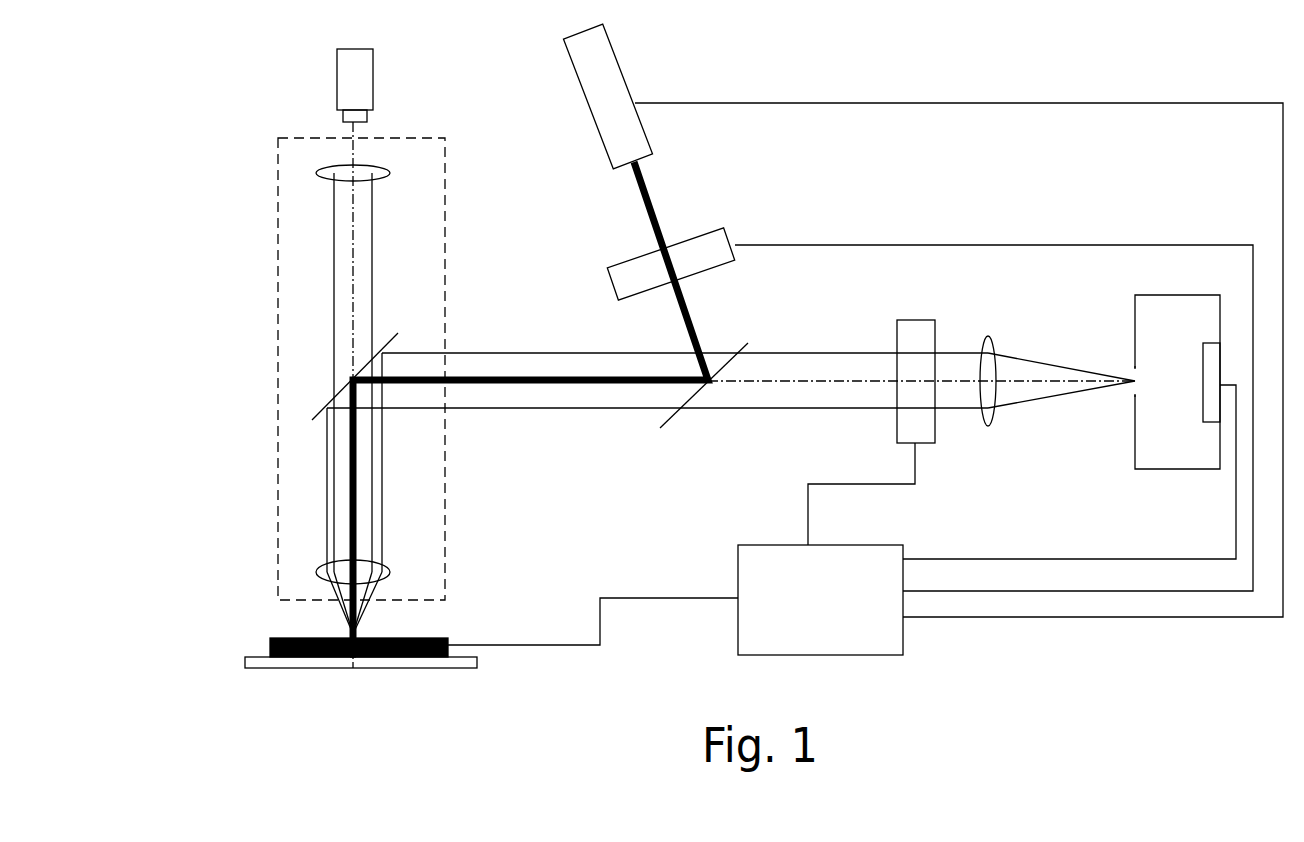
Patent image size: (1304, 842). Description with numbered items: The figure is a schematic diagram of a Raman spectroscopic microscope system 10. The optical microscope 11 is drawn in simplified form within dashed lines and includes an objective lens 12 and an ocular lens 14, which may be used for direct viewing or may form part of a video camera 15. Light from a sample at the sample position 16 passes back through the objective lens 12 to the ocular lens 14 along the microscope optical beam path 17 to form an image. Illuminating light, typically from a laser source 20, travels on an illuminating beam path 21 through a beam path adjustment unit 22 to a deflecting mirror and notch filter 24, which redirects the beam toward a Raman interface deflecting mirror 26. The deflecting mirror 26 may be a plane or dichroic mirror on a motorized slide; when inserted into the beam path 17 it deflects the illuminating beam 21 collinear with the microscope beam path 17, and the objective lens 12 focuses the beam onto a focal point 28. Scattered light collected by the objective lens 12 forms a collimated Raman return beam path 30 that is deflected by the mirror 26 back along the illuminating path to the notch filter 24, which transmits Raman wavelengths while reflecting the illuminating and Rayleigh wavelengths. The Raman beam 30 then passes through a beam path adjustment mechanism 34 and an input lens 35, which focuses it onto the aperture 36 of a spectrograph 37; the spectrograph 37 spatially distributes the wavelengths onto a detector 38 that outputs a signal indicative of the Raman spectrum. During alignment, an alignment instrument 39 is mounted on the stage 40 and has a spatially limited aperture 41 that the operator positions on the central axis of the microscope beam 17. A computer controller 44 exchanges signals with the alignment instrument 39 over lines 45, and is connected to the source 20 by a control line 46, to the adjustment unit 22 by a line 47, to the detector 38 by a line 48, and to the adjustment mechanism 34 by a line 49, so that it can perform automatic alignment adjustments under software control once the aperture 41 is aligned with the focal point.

The spectroscopic microscope system 10 is at (898, 94).
The optical microscope 11 is at (278, 268).
The objective lens 12 is at (385, 565).
The ocular lens 14 is at (380, 170).
The video camera 15 is at (375, 60).
The sample position 16 is at (360, 655).
The microscope optical beam path 17 is at (372, 268).
The source 20 is at (617, 60).
The illuminating beam path 21 is at (650, 203).
The beam path adjustment unit 22 is at (630, 258).
The deflecting mirror and notch filter 24 is at (748, 343).
The deflecting mirror 26 is at (383, 343).
The focal point 28 is at (362, 633).
The Raman return beam path 30 is at (325, 482).
The beam path adjustment mechanism 34 is at (912, 320).
The input lens 35 is at (995, 352).
The aperture 36 is at (1128, 372).
The spectrograph 37 is at (1155, 295).
The detector 38 is at (1203, 402).
The alignment instrument 39 is at (270, 648).
The stage 40 is at (478, 663).
The spatially limited aperture 41 is at (350, 638).
The computer controller 44 is at (770, 545).
The lines 45 is at (598, 597).
The control line 46 is at (1037, 103).
The line 47 is at (960, 245).
The line 48 is at (965, 558).
The line 49 is at (868, 483).